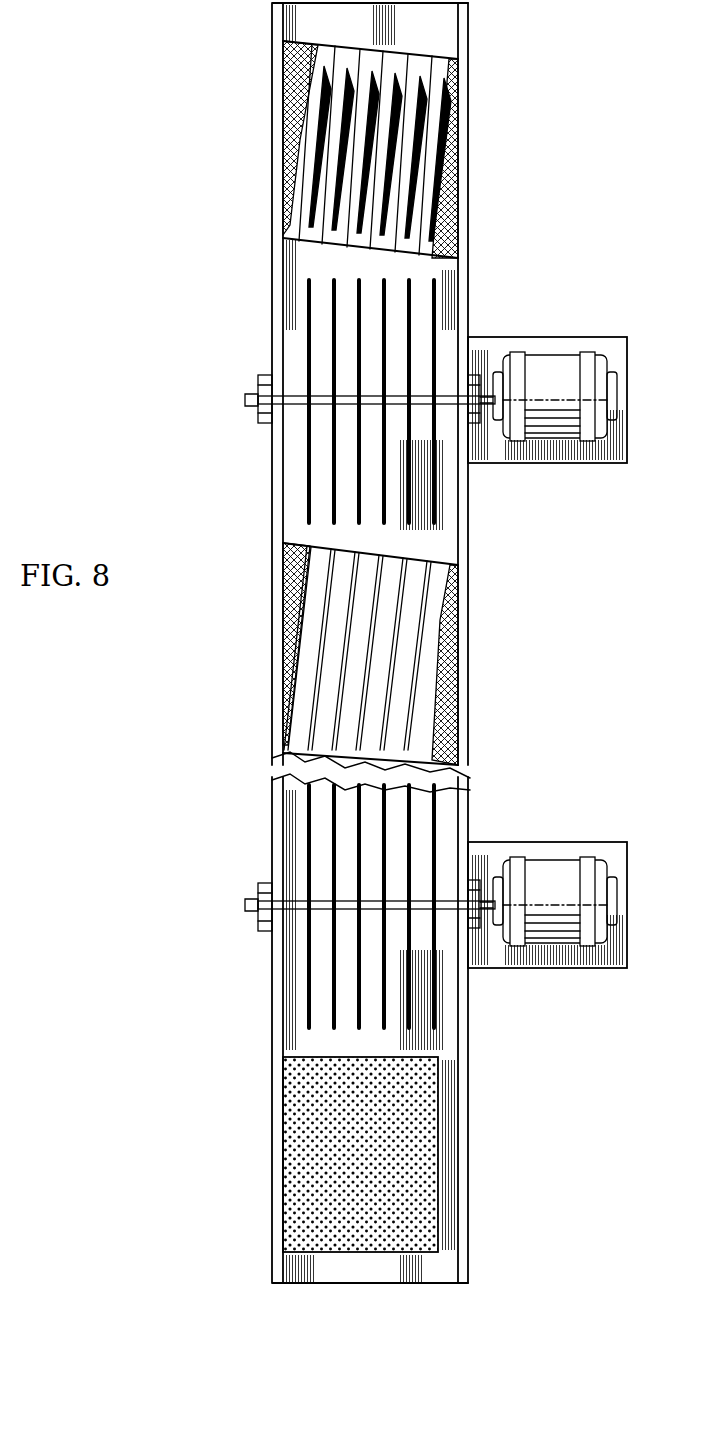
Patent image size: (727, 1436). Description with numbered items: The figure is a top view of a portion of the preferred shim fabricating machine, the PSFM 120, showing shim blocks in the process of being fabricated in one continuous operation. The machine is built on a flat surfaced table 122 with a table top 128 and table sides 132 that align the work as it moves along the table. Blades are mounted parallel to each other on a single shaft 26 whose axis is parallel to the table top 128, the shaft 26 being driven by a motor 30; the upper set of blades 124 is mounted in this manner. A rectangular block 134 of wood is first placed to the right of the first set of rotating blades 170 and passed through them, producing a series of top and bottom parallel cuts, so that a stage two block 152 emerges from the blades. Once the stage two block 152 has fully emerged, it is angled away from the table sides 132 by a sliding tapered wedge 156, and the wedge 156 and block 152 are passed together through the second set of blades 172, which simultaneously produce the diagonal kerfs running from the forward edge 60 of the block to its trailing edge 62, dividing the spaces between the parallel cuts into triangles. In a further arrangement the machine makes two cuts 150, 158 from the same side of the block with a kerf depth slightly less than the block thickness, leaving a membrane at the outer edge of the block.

The shaft 26 is at (252, 390).
The motor 30 is at (565, 380).
The forward edge 60 is at (283, 536).
The trailing edge 62 is at (280, 740).
The preferred shim fabricating machine (PSFM) 120 is at (280, 278).
The flat surfaced table 122 is at (465, 490).
The upper set of blades 124 is at (440, 302).
The table top 128 is at (443, 40).
The table sides 132 is at (280, 476).
The block 134 is at (308, 1148).
The cut 150 is at (443, 108).
The stage two block 152 is at (278, 650).
The sliding tapered wedge 156 is at (283, 57).
The cut 158 is at (290, 183).
The first set of rotating blades 170 is at (303, 985).
The second set of blades 172 is at (308, 440).